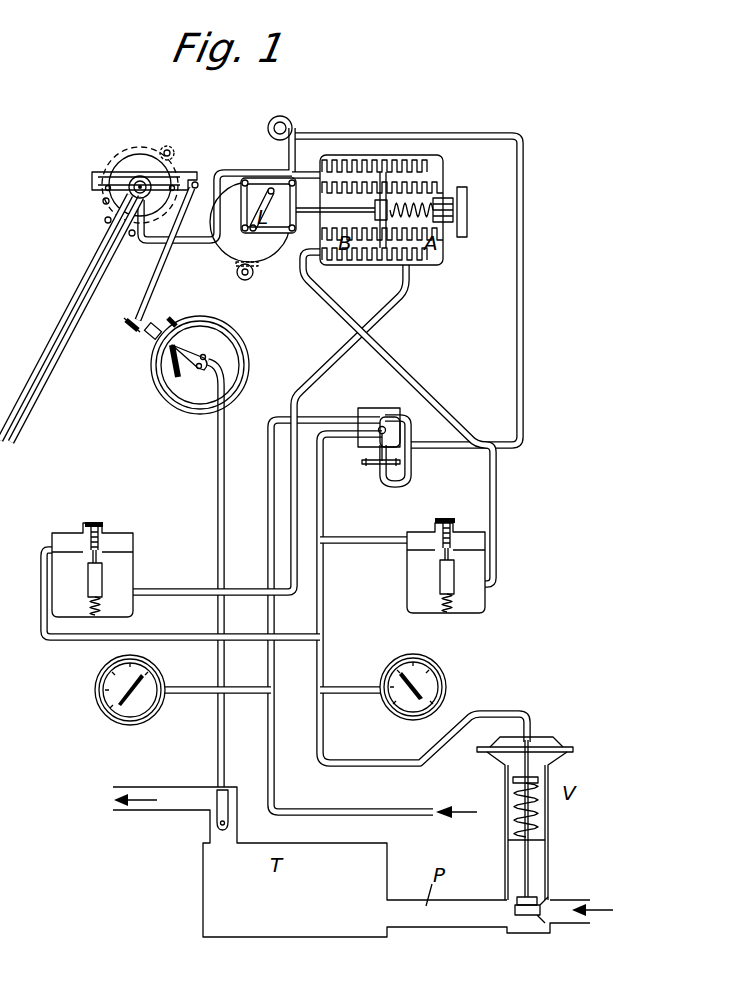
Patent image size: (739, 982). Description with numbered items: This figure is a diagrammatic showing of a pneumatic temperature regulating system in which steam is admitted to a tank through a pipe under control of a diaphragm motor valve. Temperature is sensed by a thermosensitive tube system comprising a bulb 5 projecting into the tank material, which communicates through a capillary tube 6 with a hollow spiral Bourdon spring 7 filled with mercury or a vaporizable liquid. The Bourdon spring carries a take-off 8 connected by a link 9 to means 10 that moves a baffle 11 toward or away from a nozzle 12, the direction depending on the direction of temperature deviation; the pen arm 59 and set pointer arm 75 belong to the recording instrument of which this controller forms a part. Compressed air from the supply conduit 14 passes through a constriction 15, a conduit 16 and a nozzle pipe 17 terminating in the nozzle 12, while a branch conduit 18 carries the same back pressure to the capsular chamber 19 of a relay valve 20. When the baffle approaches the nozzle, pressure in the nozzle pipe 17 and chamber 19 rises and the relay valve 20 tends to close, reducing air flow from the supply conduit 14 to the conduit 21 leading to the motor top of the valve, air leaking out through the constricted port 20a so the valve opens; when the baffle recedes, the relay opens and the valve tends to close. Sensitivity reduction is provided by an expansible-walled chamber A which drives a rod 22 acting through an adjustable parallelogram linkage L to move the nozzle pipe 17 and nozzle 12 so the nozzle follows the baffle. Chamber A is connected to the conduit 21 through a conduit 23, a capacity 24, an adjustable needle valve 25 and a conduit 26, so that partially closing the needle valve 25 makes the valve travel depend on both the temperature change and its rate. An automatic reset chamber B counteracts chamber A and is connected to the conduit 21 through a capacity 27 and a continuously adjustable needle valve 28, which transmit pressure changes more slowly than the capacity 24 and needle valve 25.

The bulb 5 is at (229, 814).
The capillary tube 6 is at (228, 625).
The hollow spiral Bourdon spring 7 is at (244, 338).
The take-off 8 is at (150, 324).
The link 9 is at (158, 292).
The means 10 is at (190, 172).
The baffle 11 is at (108, 192).
The nozzle 12 is at (150, 196).
The supply conduit 14 is at (276, 796).
The constriction 15 is at (389, 416).
The conduit 16 is at (524, 245).
The nozzle pipe 17 is at (224, 171).
The branch conduit 18 is at (410, 486).
The capsular chamber 19 is at (377, 479).
The relay valve 20 is at (365, 408).
The constricted port 20a is at (372, 452).
The conduit 21 is at (324, 600).
The rod 22 is at (323, 210).
The conduit 23 is at (160, 592).
The capacity 24 is at (125, 565).
The adjustable needle valve 25 is at (98, 522).
The conduit 26 is at (78, 642).
The capacity 27 is at (412, 592).
The continuously adjustable needle valve 28 is at (448, 519).
The pen arm 59 is at (82, 292).
The set pointer arm 75 is at (60, 370).